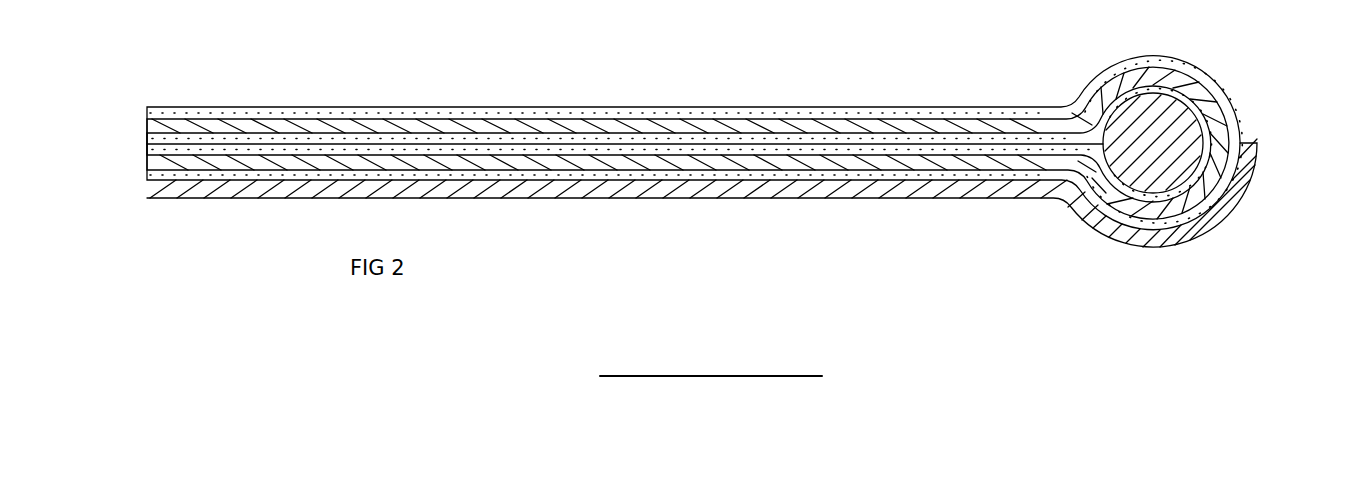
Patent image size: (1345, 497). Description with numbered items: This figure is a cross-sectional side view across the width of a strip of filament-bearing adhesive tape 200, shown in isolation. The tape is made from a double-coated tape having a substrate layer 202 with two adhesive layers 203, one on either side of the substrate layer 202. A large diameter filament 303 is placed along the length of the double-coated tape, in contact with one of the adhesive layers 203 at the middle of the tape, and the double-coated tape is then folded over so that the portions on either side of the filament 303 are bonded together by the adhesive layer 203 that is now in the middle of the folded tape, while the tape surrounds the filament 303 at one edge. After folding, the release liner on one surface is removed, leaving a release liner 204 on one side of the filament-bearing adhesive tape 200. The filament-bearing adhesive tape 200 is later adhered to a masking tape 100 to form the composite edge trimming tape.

The masking tape 100 is at (719, 361).
The filament-bearing adhesive tape 200 is at (559, 97).
The substrate layer 202 is at (147, 130).
The adhesive layer 203 is at (821, 107).
The release liner 204 is at (838, 200).
The filament 303 is at (1152, 140).